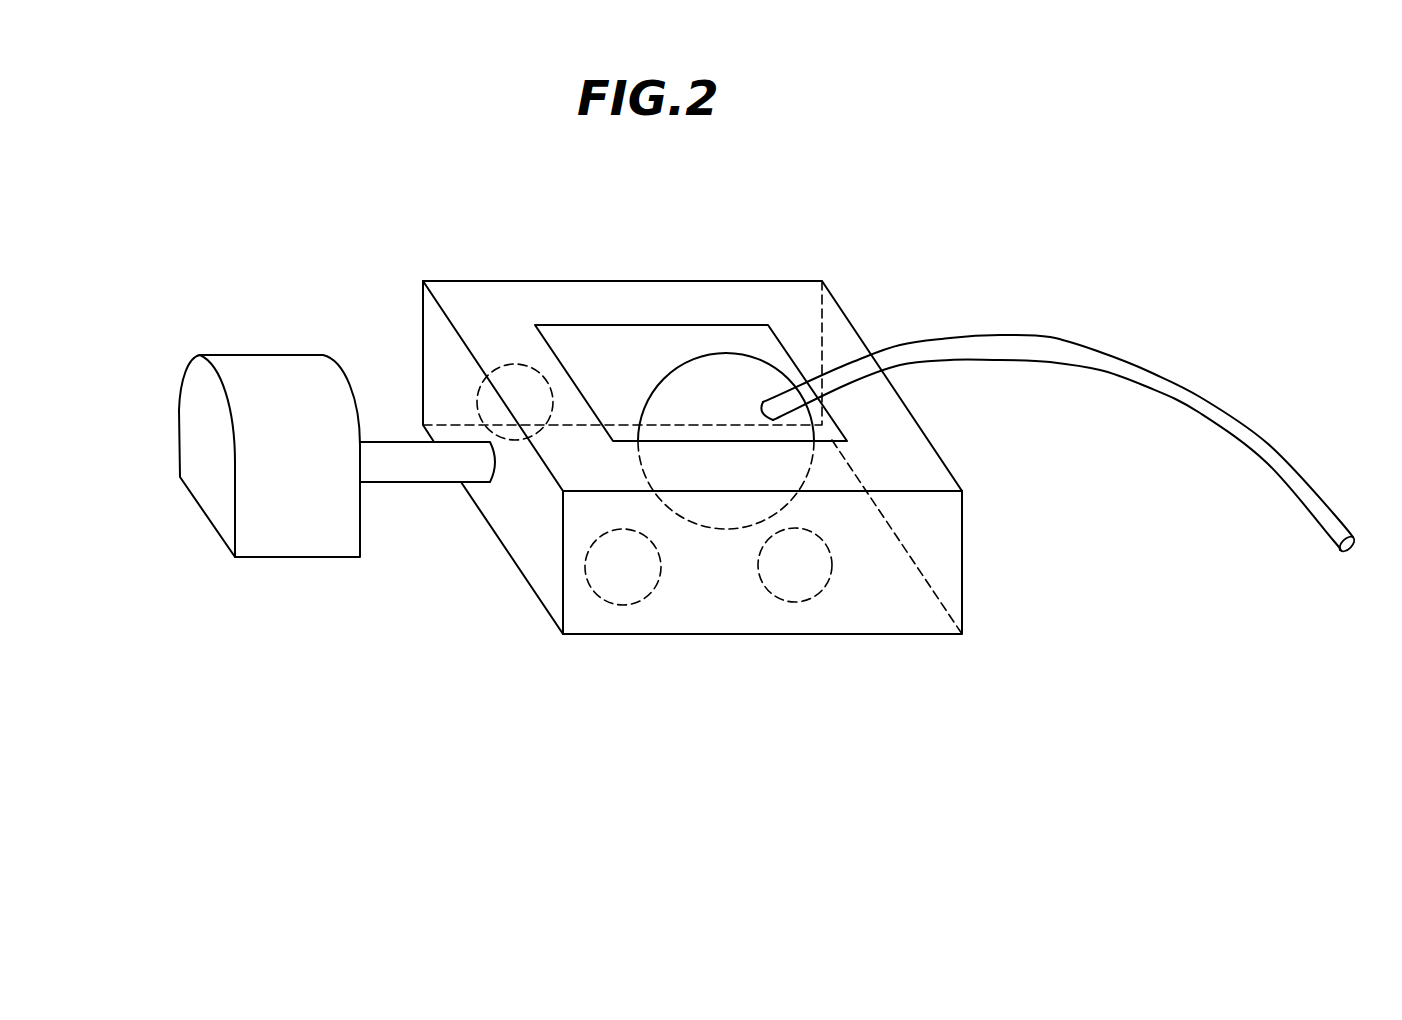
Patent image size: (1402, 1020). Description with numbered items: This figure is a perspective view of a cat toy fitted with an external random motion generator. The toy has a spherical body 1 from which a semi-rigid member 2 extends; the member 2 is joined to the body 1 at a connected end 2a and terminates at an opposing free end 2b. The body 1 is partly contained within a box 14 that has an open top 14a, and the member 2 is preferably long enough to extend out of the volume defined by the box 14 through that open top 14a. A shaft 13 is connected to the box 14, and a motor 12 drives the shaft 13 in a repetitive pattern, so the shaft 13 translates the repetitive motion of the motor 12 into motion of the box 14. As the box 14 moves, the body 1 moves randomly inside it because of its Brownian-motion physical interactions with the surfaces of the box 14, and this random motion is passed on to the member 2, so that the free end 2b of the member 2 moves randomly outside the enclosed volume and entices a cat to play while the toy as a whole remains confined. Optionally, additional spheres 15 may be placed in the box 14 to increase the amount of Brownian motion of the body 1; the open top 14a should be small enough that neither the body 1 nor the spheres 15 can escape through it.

The spherical body 1 is at (718, 373).
The semi-rigid member 2 is at (1047, 350).
The connected end 2a is at (762, 385).
The free end 2b is at (1350, 557).
The motor 12 is at (203, 393).
The shaft 13 is at (400, 463).
The box 14 is at (468, 298).
The open top 14a is at (600, 342).
The additional spheres 15 is at (517, 398).